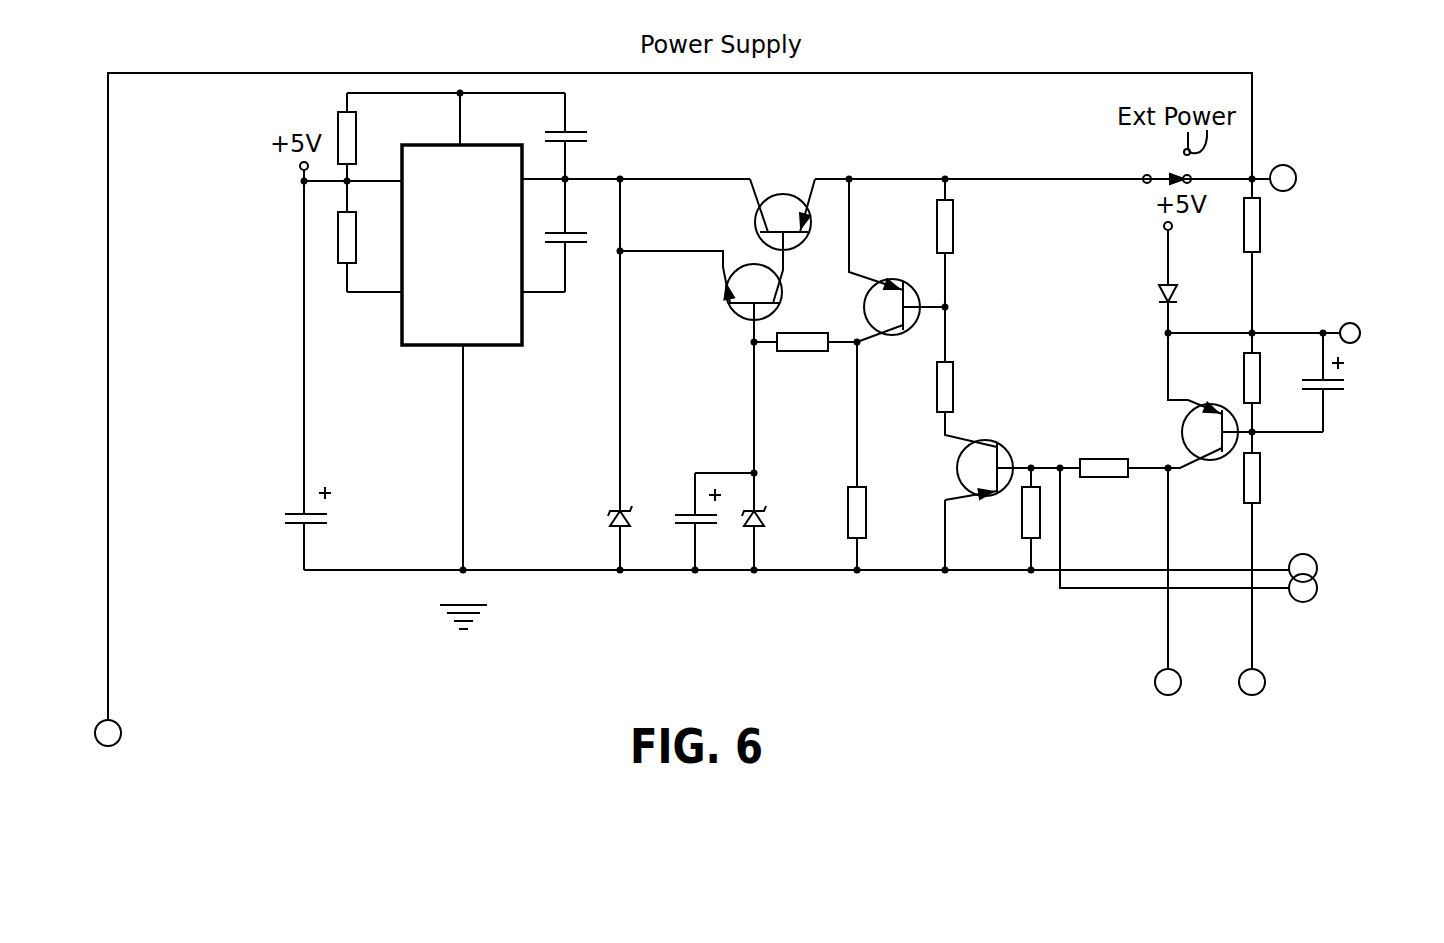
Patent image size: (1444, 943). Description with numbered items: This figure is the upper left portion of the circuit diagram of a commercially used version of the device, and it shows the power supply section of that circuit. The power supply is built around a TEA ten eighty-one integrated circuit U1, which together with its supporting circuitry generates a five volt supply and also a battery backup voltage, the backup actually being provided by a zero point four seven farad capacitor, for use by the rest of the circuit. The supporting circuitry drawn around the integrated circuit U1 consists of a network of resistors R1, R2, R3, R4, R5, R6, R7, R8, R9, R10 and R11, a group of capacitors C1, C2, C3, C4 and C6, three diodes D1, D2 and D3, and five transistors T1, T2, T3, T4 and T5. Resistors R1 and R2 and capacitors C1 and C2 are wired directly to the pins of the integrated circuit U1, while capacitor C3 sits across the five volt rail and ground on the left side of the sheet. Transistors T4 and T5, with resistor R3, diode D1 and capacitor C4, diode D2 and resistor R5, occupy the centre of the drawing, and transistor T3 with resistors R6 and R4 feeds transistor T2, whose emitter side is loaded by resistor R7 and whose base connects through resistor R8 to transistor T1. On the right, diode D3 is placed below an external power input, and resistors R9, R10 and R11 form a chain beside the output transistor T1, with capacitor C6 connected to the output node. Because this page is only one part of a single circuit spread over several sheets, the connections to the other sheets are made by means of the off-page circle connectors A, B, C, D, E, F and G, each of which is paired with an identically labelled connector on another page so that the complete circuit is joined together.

The TEA1081 integrated circuit U1 is at (428, 348).
The resistor 100K R1 is at (337, 125).
The resistor 100K R2 is at (337, 233).
The resistor 100K R3 is at (790, 352).
The resistor 100K R4 is at (955, 360).
The resistor 100K R5 is at (848, 525).
The resistor 560K R6 is at (952, 244).
The resistor 560K R7 is at (1020, 525).
The resistor 100K R8 is at (1093, 478).
The resistor 560K R9 is at (1262, 242).
The resistor 150K R10 is at (1262, 358).
The resistor 560K R11 is at (1262, 460).
The capacitor 2.2uF C1 is at (583, 145).
The capacitor 68uF C2 is at (555, 248).
The capacitor 100uF/16V C3 is at (292, 523).
The capacitor 2.2uF/16V C4 is at (685, 530).
The capacitor 100uF/16V C6 is at (1350, 385).
The zener diode 12V D1 is at (610, 522).
The zener diode 6V2 D2 is at (766, 522).
The diode 1N4148 D3 is at (1158, 290).
The transistor BC559 T1 is at (1187, 413).
The transistor MPSA42 T2 is at (988, 440).
The transistor MPSA92 T3 is at (917, 290).
The transistor MPSA42 T4 is at (722, 300).
The transistor MPSA92 T5 is at (785, 193).
The off-page circle connector A is at (1283, 165).
The off-page circle connector B is at (1358, 330).
The off-page circle connector C is at (1318, 562).
The off-page circle connector D is at (1318, 596).
The off-page circle connector E is at (1242, 676).
The off-page circle connector F is at (1160, 672).
The off-page circle connector G is at (122, 727).